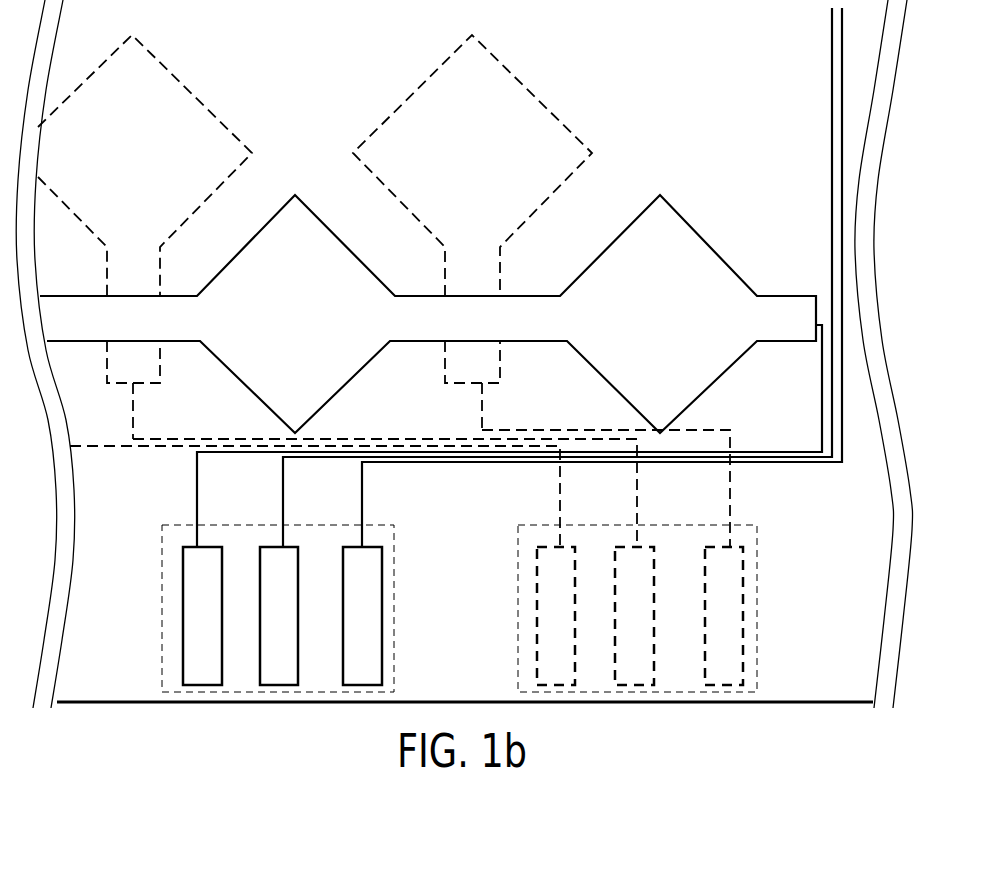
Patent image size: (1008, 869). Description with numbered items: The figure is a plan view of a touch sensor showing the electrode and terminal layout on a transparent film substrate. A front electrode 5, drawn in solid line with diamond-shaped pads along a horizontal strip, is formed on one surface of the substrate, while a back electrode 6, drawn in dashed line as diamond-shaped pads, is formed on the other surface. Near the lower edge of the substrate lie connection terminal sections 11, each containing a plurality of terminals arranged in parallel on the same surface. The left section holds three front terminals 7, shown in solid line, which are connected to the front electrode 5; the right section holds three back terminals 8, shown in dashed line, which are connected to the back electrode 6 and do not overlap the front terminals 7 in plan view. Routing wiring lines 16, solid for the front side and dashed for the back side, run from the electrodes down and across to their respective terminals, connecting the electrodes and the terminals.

The front electrode 5 is at (683, 262).
The back electrode 6 is at (182, 128).
The front terminals 7 is at (205, 575).
The back terminals 8 is at (723, 568).
The connection terminal section 11 is at (395, 677).
The routing wiring lines 16 is at (832, 82).